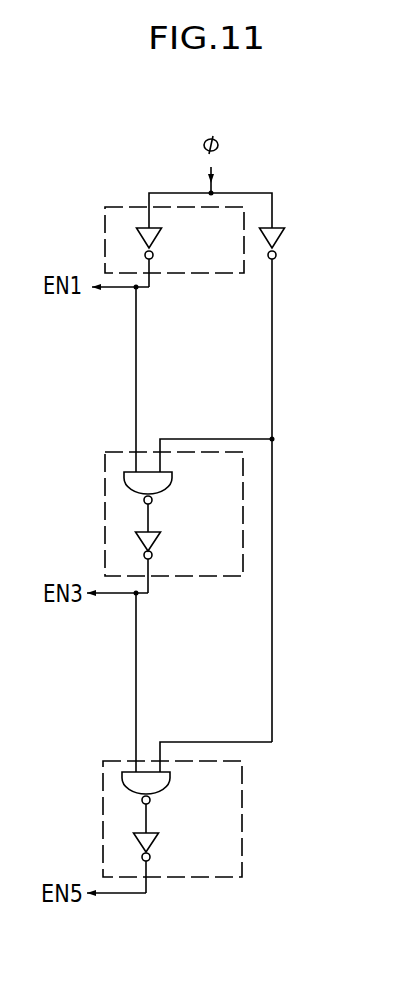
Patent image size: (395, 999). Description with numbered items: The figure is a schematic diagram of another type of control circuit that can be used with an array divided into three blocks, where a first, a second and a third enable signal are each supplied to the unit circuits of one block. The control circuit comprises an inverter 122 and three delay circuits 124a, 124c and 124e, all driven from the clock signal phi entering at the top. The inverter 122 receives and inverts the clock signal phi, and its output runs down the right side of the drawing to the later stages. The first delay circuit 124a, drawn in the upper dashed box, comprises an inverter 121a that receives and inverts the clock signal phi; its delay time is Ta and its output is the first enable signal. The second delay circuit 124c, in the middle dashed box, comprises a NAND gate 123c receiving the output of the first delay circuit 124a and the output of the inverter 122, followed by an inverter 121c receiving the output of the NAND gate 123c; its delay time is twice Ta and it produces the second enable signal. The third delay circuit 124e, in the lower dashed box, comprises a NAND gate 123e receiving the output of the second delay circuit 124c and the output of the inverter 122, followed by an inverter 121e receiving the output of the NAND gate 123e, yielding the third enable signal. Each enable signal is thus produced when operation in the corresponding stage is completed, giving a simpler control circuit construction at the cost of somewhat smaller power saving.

The inverter 122 is at (275, 237).
The inverter 121a is at (156, 237).
The first delay circuit 124a is at (104, 250).
The NAND gate 123c is at (160, 482).
The inverter 121c is at (157, 537).
The second delay circuit 124c is at (104, 510).
The NAND gate 123e is at (157, 782).
The inverter 121e is at (153, 838).
The third delay circuit 124e is at (103, 836).